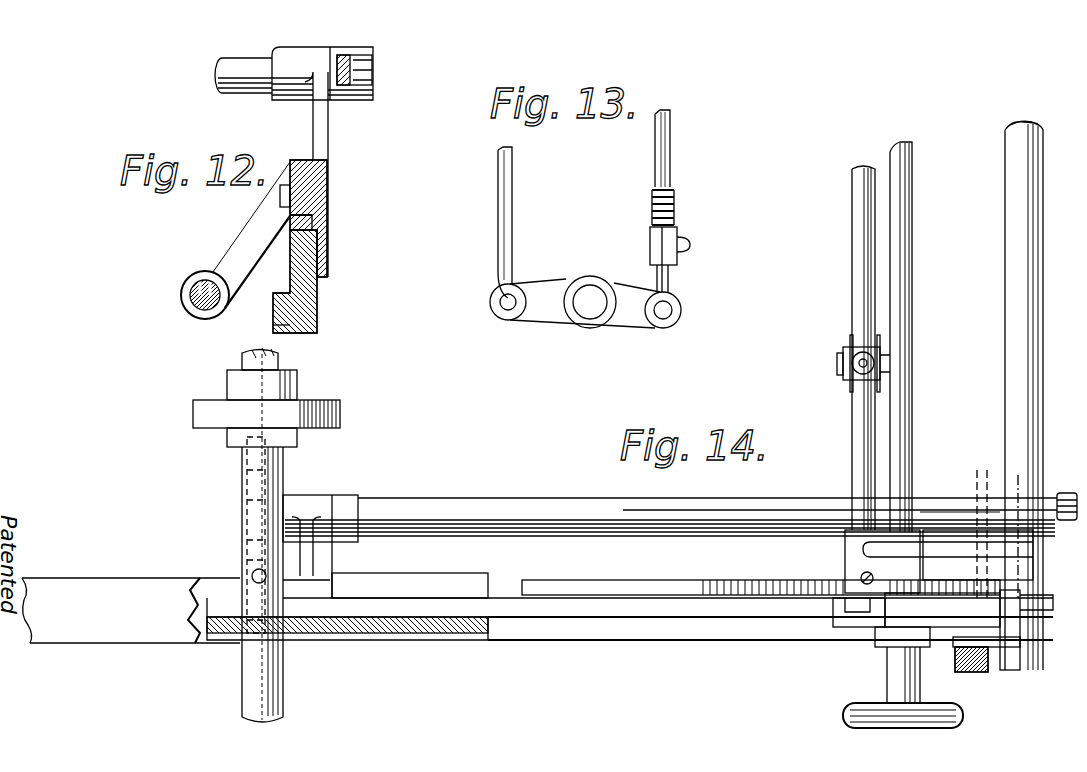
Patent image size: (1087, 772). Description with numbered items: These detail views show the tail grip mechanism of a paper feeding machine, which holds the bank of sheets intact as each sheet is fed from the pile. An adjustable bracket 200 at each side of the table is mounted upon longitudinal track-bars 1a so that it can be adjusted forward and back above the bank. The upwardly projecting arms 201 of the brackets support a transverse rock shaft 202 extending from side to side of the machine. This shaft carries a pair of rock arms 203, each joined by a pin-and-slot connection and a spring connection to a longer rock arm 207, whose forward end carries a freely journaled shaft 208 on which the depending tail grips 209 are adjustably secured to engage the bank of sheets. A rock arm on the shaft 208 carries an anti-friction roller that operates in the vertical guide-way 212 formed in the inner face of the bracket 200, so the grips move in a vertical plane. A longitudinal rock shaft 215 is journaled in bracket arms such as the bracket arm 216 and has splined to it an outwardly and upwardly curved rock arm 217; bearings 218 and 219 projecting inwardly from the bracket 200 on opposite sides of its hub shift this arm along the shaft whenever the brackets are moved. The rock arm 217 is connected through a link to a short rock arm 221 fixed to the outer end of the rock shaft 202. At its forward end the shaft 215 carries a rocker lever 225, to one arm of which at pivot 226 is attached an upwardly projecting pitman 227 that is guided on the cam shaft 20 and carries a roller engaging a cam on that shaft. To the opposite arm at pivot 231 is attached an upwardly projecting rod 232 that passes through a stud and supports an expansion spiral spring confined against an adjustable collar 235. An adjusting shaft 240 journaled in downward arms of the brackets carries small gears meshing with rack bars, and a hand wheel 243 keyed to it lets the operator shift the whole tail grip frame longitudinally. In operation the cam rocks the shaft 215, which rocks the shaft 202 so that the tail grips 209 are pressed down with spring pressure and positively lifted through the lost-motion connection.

In FIG. 12, the longitudinal track-bars 1a is at (317, 297).
In FIG. 14, the longitudinal track-bars 1a is at (755, 607).
In FIG. 14, the cam shaft 20 is at (253, 698).
In FIG. 12, the adjustable bracket 200 is at (323, 213).
In FIG. 14, the adjustable bracket 200 is at (948, 620).
In FIG. 12, the upwardly projecting arms 201 is at (318, 120).
In FIG. 14, the upwardly projecting arms 201 is at (1026, 630).
In FIG. 12, the rock shaft 202 is at (257, 87).
In FIG. 14, the rock shaft 202 is at (1007, 398).
In FIG. 14, the rock arms 203 is at (1003, 567).
In FIG. 14, the long rock arm 207 is at (858, 493).
In FIG. 14, the freely journaled shaft 208 is at (862, 512).
In FIG. 14, the tail grips 209 is at (842, 363).
In FIG. 14, the vertical guide-way 212 is at (853, 617).
In FIG. 12, the longitudinal rock shaft 215 is at (200, 310).
In FIG. 13, the longitudinal rock shaft 215 is at (596, 303).
In FIG. 14, the longitudinal rock shaft 215 is at (671, 500).
In FIG. 14, the bracket arm 216 is at (307, 505).
In FIG. 14, the rock arm 217 is at (985, 493).
In FIG. 12, the bearing 218 is at (207, 277).
In FIG. 14, the bearing 218 is at (1065, 491).
In FIG. 14, the bearing 219 is at (933, 497).
In FIG. 12, the short rock arm 221 is at (353, 63).
In FIG. 13, the rocker lever 225 is at (632, 318).
In FIG. 14, the rocker lever 225 is at (240, 532).
In FIG. 13, the pivot 226 is at (506, 304).
In FIG. 13, the pitman 227 is at (505, 208).
In FIG. 14, the pitman 227 is at (267, 442).
In FIG. 13, the pivot 231 is at (672, 310).
In FIG. 13, the rod 232 is at (670, 160).
In FIG. 14, the rod 232 is at (252, 572).
In FIG. 13, the adjustable collar 235 is at (672, 198).
In FIG. 14, the adjusting shaft 240 is at (912, 313).
In FIG. 14, the hand wheel 243 is at (903, 694).